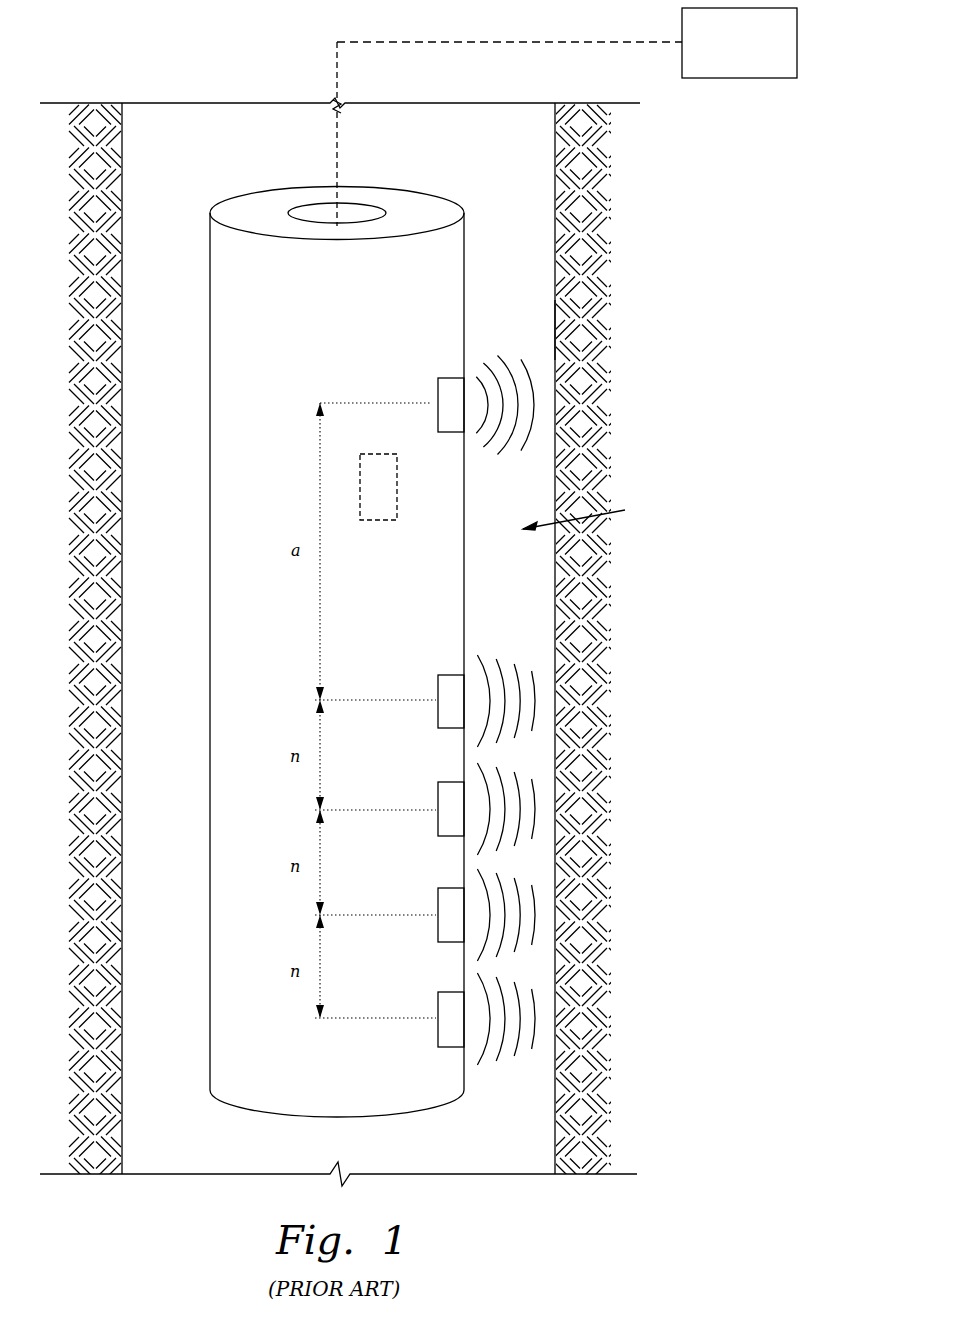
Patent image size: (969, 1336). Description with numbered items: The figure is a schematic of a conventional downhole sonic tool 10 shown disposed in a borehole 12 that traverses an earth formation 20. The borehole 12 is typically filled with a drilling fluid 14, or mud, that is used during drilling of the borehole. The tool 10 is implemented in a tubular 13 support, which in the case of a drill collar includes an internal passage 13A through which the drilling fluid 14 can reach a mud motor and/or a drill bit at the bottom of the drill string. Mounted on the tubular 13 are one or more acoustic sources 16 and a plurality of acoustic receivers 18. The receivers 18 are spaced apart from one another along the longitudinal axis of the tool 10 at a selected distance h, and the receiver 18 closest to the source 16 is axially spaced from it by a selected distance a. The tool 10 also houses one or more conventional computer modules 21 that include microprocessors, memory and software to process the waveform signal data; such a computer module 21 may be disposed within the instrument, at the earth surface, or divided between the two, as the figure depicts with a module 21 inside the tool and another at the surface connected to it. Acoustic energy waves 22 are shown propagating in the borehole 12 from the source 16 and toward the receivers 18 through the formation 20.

The tool 10 is at (592, 516).
The borehole 12 is at (533, 161).
The tubular support 13 is at (465, 296).
The internal passage 13A is at (354, 210).
The drilling fluid 14 is at (533, 247).
The acoustic source 16 is at (447, 378).
The acoustic receivers 18 is at (447, 675).
The earth formation 20 is at (597, 334).
The computer module 21 is at (717, 78).
The acoustic energy waves 22 is at (555, 707).